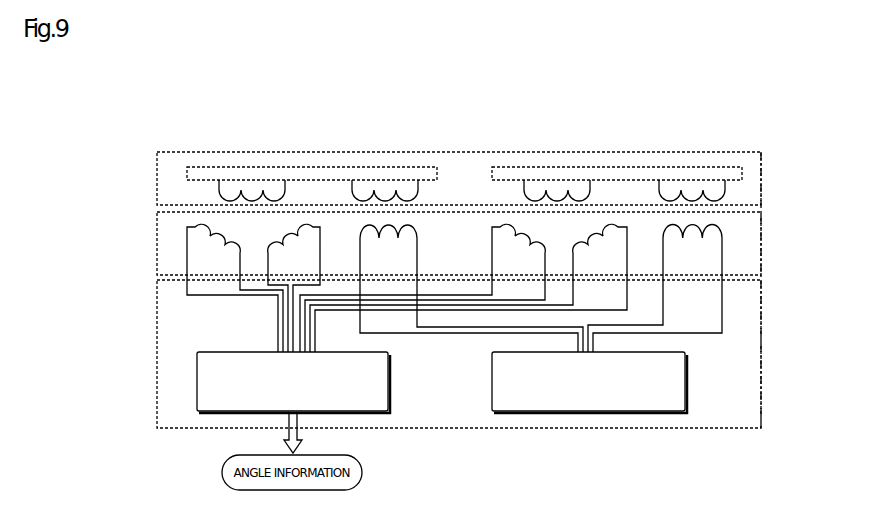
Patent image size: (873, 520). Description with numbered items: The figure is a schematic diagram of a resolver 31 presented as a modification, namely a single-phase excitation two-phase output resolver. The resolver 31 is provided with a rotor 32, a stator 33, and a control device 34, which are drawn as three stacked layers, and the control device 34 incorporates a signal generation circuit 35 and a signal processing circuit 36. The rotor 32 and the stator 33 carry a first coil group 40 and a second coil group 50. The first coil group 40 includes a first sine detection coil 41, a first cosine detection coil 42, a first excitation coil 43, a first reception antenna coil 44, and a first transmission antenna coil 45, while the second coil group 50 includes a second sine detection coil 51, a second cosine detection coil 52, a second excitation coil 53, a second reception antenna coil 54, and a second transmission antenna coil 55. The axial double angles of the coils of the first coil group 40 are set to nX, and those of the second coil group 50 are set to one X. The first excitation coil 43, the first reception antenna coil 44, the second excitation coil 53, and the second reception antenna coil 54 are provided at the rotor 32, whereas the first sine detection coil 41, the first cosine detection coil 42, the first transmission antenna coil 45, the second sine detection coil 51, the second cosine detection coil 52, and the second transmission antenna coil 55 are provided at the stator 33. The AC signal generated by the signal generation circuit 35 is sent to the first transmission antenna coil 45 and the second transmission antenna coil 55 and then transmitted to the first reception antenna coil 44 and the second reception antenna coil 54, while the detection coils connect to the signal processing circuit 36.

The resolver 31 is at (790, 136).
The rotor 32 is at (762, 173).
The stator 33 is at (762, 228).
The control device 34 is at (762, 330).
The signal generation circuit 35 is at (688, 384).
The signal processing circuit 36 is at (392, 386).
The first coil group 40 is at (249, 135).
The first sine detection coil 41 is at (204, 223).
The first cosine detection coil 42 is at (306, 224).
The first excitation coil 43 is at (214, 183).
The first reception antenna coil 44 is at (356, 206).
The first transmission antenna coil 45 is at (430, 205).
The second coil group 50 is at (551, 135).
The second sine detection coil 51 is at (509, 223).
The second cosine detection coil 52 is at (613, 222).
The second excitation coil 53 is at (518, 184).
The second reception antenna coil 54 is at (659, 204).
The second transmission antenna coil 55 is at (732, 206).